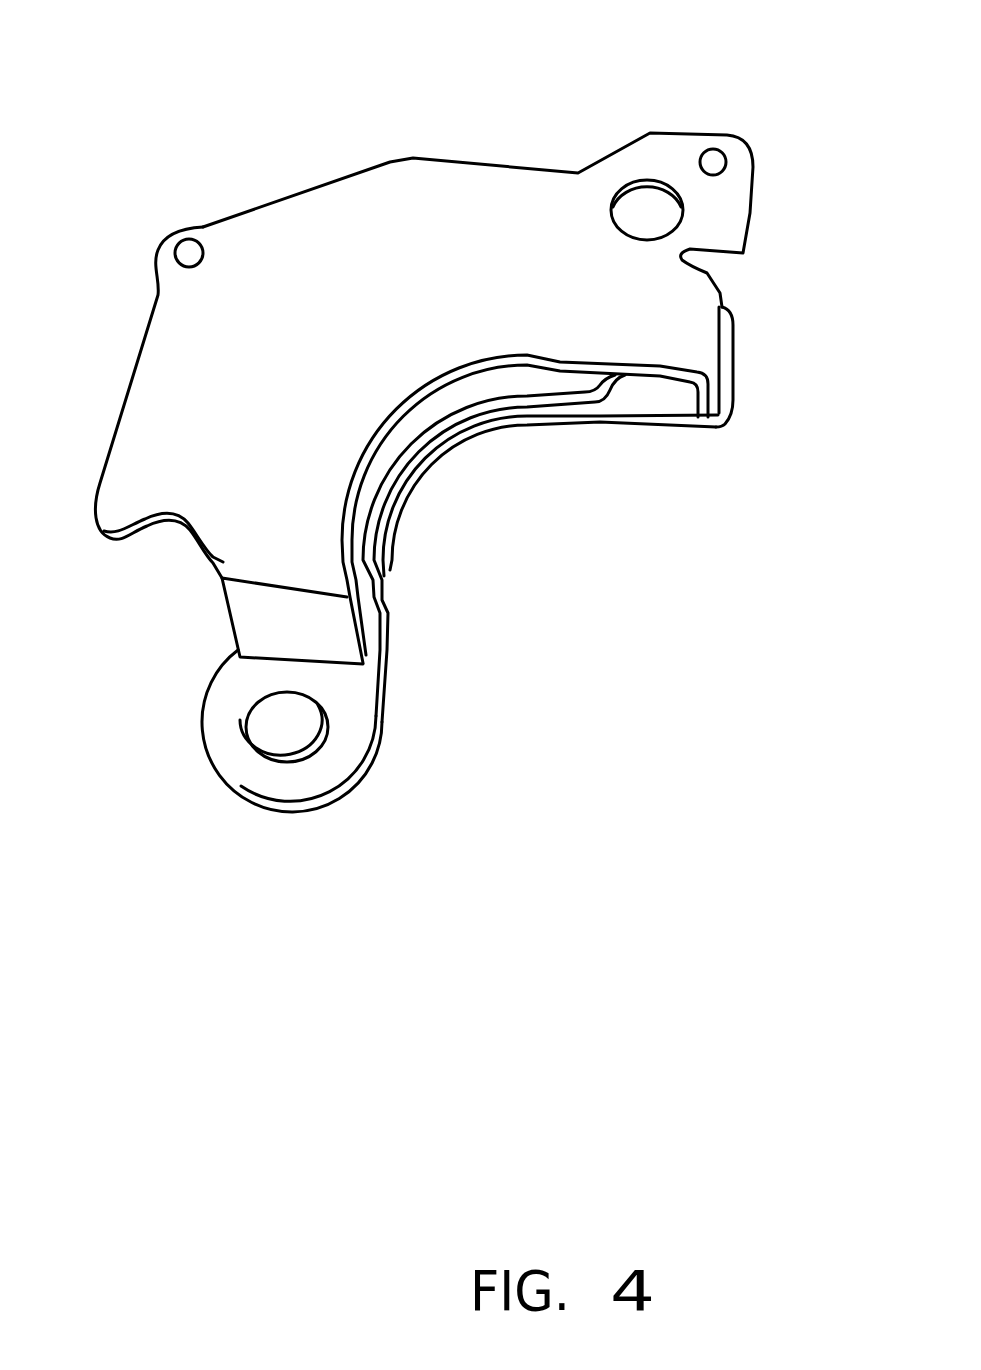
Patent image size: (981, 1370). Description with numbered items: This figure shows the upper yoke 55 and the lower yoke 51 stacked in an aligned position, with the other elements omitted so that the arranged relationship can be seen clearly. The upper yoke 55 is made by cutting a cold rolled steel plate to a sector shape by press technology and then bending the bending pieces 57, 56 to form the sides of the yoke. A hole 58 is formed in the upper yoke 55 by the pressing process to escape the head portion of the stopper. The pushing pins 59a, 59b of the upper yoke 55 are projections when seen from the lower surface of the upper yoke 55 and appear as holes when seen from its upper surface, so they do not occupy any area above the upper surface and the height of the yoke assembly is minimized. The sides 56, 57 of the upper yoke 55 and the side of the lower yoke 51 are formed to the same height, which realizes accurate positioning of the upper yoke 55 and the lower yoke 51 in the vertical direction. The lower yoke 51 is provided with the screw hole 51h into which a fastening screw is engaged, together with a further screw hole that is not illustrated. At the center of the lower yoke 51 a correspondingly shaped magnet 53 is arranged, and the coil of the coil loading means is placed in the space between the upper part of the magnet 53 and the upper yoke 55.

The lower yoke 51 is at (303, 780).
The screw hole 51h is at (257, 733).
The magnet 53 is at (535, 380).
The upper yoke 55 is at (385, 182).
The bending piece 56 is at (697, 352).
The bending piece 57 is at (342, 647).
The hole 58 is at (623, 203).
The pushing pin 59a is at (189, 252).
The pushing pin 59b is at (708, 162).